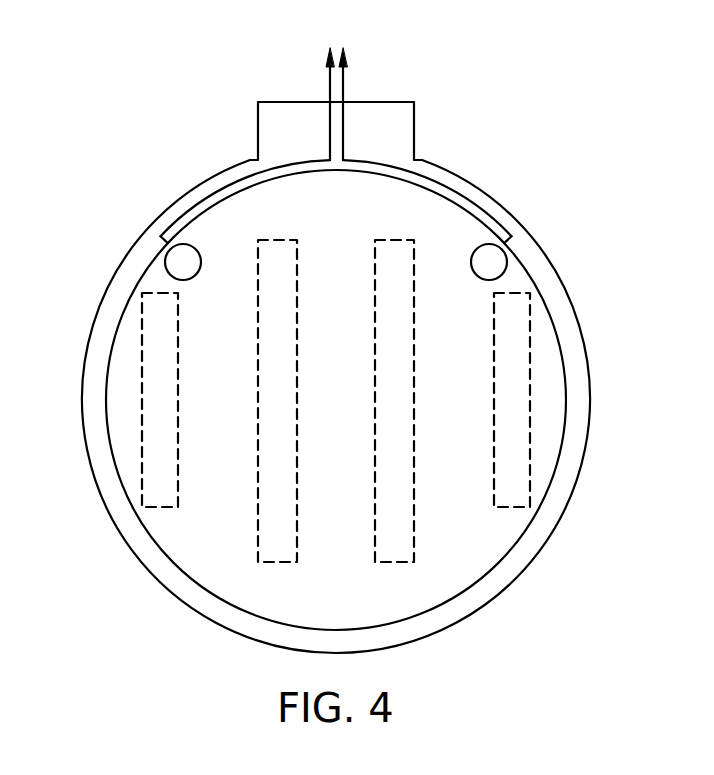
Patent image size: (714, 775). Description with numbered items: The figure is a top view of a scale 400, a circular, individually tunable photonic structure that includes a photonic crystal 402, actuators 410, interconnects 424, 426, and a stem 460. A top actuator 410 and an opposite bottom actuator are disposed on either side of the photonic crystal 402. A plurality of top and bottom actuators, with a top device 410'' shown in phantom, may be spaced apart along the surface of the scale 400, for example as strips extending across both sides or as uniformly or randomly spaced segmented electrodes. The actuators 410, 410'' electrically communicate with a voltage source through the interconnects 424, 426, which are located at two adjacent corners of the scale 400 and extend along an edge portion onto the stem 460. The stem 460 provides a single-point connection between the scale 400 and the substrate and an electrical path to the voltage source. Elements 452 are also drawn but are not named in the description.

The scale 400 is at (553, 168).
The photonic crystal 402 is at (527, 553).
The actuator 410 is at (336, 406).
The top device 410'' is at (339, 401).
The interconnect 424 is at (188, 272).
The interconnect 426 is at (482, 270).
The electrodes 452 is at (215, 187).
The stem 460 is at (385, 110).